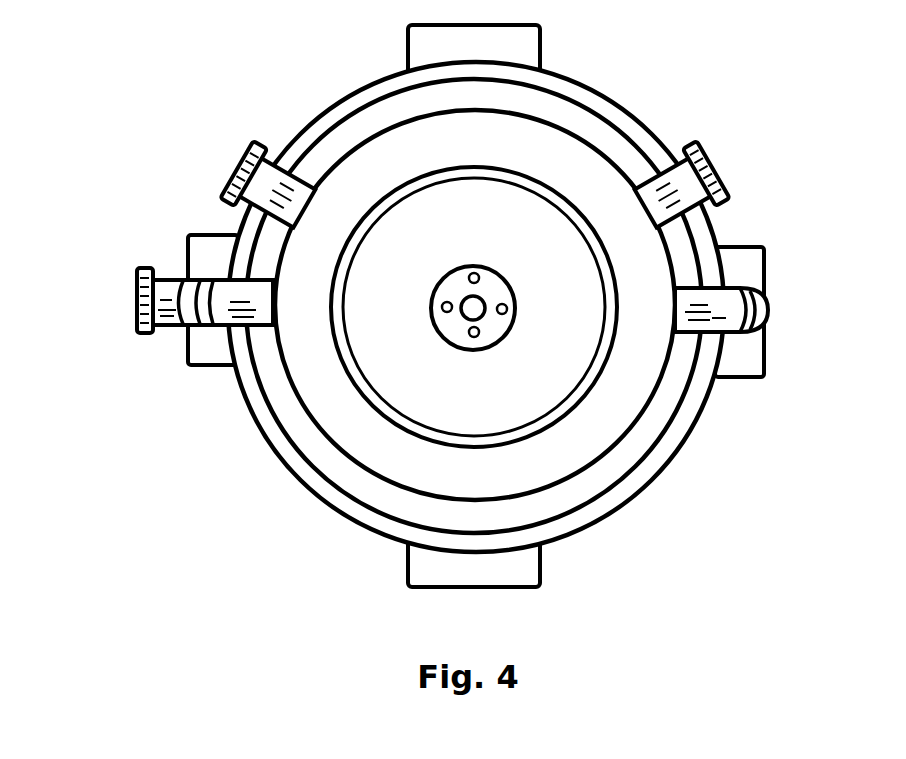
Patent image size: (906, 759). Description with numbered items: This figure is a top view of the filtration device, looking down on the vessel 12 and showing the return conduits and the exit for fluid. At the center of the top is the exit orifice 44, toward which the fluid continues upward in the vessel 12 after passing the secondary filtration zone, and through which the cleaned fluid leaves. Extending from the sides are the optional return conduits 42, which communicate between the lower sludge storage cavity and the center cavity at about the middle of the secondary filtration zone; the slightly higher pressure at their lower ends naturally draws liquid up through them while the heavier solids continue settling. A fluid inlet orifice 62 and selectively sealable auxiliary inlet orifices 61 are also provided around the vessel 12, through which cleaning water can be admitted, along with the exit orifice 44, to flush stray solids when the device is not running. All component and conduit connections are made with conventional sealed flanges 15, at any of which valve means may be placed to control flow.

The vessel 12 is at (415, 470).
The flange 15 is at (145, 268).
The return conduit 42 is at (733, 315).
The exit orifice 44 is at (473, 305).
The auxiliary inlet orifice 61 is at (256, 145).
The fluid inlet orifice 62 is at (157, 333).